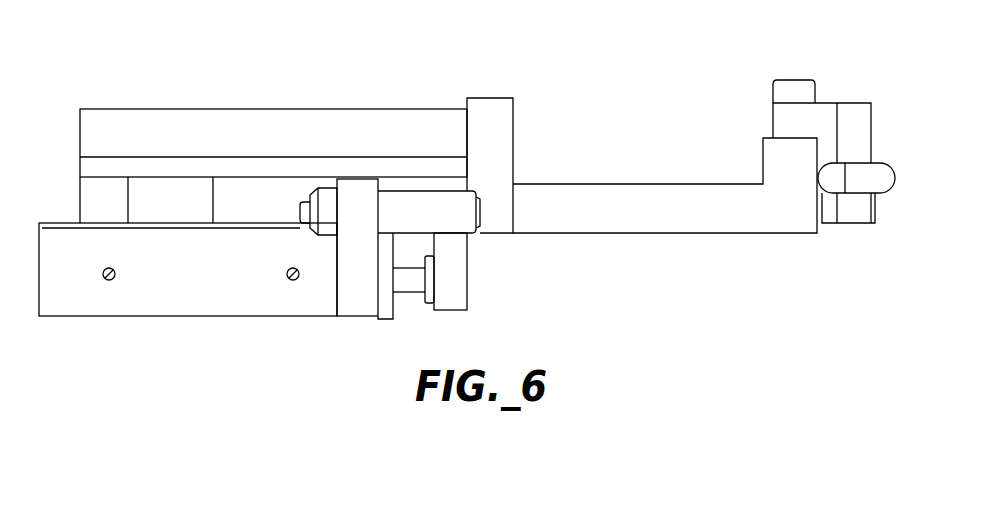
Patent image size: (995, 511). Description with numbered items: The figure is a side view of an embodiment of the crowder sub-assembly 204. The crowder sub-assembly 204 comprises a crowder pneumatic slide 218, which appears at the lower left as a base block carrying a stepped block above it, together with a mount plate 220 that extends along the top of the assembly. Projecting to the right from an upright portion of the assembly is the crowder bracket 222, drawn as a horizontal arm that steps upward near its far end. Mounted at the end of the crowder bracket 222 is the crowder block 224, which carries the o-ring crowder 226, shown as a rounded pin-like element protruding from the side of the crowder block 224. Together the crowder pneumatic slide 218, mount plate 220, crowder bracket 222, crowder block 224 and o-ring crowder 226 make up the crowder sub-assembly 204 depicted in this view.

The crowder sub-assembly 204 is at (204, 43).
The crowder pneumatic slide 218 is at (62, 222).
The mount plate 220 is at (312, 108).
The crowder bracket 222 is at (576, 184).
The crowder block 224 is at (826, 102).
The o-ring crowder 226 is at (862, 193).